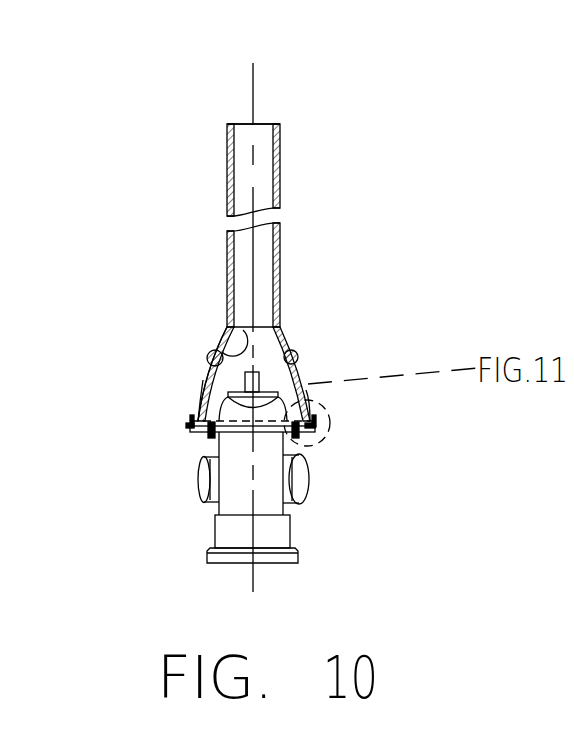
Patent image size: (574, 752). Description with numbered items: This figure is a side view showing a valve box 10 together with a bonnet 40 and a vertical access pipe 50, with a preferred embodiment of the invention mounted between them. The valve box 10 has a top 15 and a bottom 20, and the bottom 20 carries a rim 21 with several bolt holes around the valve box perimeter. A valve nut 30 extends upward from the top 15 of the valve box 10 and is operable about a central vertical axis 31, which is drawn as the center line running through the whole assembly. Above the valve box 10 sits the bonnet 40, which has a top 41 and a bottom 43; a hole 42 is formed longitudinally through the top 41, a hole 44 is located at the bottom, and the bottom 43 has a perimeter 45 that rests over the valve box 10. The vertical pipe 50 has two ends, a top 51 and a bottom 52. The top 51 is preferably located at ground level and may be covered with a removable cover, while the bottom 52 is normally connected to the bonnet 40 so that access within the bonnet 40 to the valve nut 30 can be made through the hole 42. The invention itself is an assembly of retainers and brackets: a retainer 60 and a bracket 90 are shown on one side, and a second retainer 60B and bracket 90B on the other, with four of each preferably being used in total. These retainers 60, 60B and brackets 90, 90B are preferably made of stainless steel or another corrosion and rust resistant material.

The valve box 10 is at (287, 444).
The top 15 is at (266, 366).
The bottom 20 is at (312, 446).
The rim 21 is at (256, 448).
The valve nut 30 is at (232, 340).
The central vertical axis 31 is at (255, 270).
The bonnet 40 is at (302, 383).
The top 41 is at (281, 336).
The hole 42 is at (203, 397).
The bottom 43 is at (305, 404).
The hole 44 is at (198, 418).
The perimeter 45 is at (193, 427).
The vertical pipe 50 is at (227, 203).
The top 51 is at (262, 122).
The bottom 52 is at (212, 354).
The retainer 60 is at (300, 452).
The retainer 60B is at (211, 432).
The bracket 90 is at (312, 424).
The bracket 90B is at (193, 425).